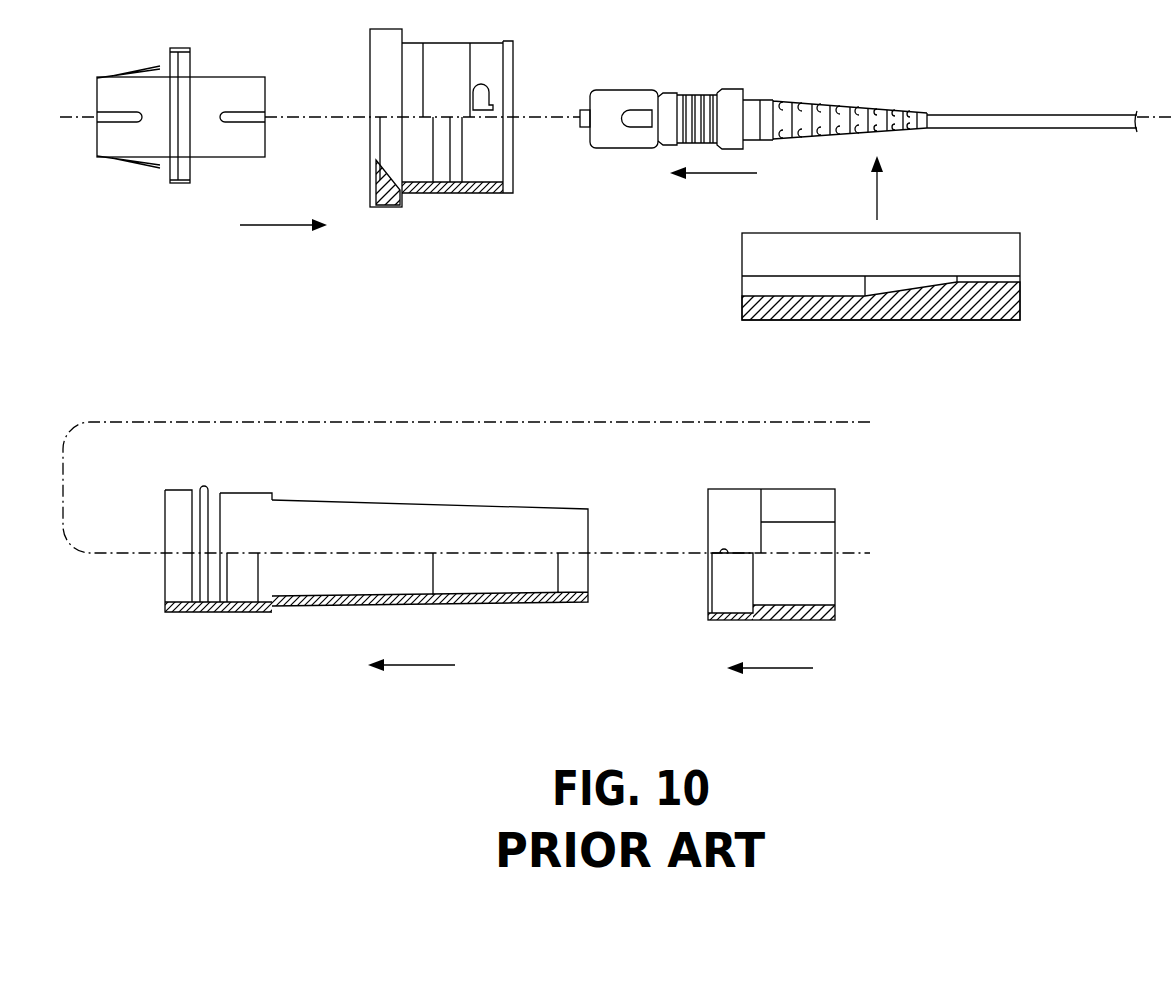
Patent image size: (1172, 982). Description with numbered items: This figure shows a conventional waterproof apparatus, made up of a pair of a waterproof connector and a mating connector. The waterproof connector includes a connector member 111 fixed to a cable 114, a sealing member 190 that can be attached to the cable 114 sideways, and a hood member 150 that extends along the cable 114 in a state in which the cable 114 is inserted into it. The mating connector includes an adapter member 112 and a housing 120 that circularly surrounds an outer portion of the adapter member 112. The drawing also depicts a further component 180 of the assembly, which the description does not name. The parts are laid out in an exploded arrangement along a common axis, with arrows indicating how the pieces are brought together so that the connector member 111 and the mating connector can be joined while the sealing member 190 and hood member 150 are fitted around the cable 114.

The connector member 111 is at (638, 166).
The adapter member 112 is at (198, 212).
The cable 114 is at (996, 116).
The housing 120 is at (382, 232).
The hood member 150 is at (444, 486).
The cap 180 is at (858, 510).
The sealing member 190 is at (886, 338).